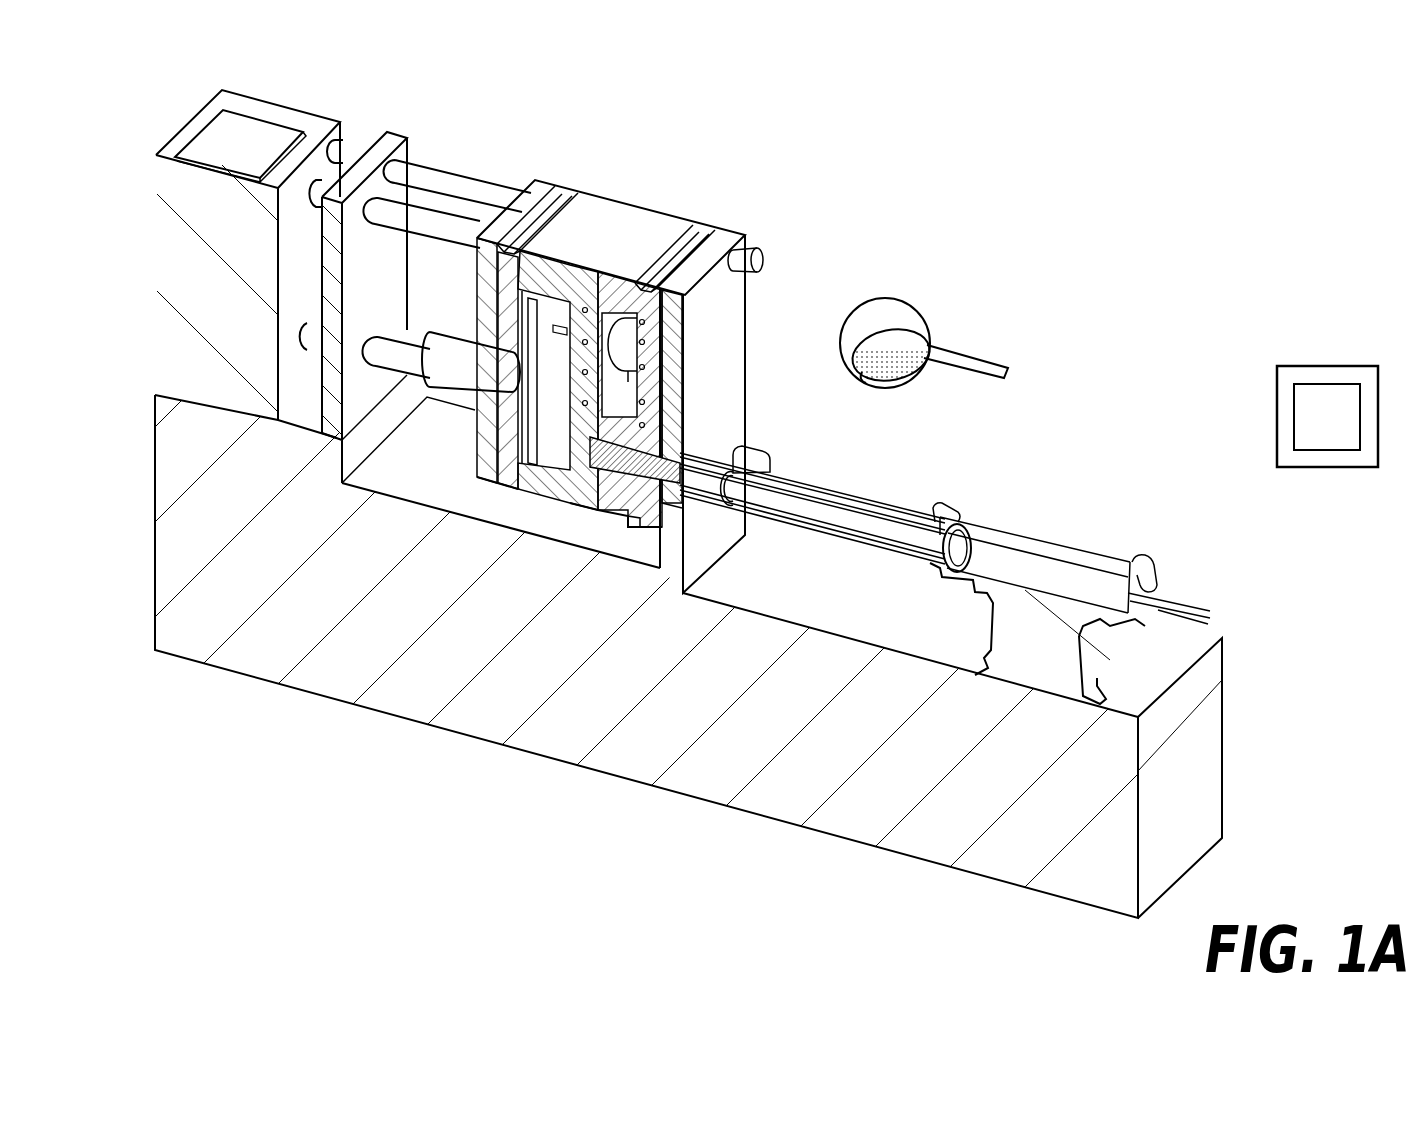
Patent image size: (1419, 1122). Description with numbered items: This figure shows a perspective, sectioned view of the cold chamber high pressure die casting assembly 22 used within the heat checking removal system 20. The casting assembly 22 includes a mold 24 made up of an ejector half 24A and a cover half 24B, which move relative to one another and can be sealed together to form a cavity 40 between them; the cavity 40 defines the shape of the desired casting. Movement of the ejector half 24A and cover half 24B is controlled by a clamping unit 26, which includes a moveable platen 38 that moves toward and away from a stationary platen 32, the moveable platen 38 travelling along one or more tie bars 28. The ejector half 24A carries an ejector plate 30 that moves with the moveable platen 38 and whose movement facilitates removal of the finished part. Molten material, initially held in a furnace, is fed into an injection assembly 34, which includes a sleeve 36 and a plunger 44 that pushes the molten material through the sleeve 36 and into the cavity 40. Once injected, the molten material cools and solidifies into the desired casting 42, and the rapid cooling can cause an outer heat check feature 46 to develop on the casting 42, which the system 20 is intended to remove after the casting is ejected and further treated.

The heat checking removal system 20 is at (1175, 340).
The casting assembly 22 is at (1230, 700).
The mold 24 is at (786, 250).
The ejector half 24A is at (634, 220).
The cover half 24B is at (675, 228).
The clamping unit 26 is at (171, 118).
The tie bars 28 is at (442, 177).
The ejector plate 30 is at (537, 477).
The stationary platen 32 is at (675, 540).
The injection assembly 34 is at (1215, 572).
The sleeve 36 is at (810, 487).
The moveable platen 38 is at (539, 170).
The cavity 40 is at (612, 387).
The casting 42 is at (1314, 431).
The plunger 44 is at (962, 550).
The heat check feature 46 is at (1330, 367).